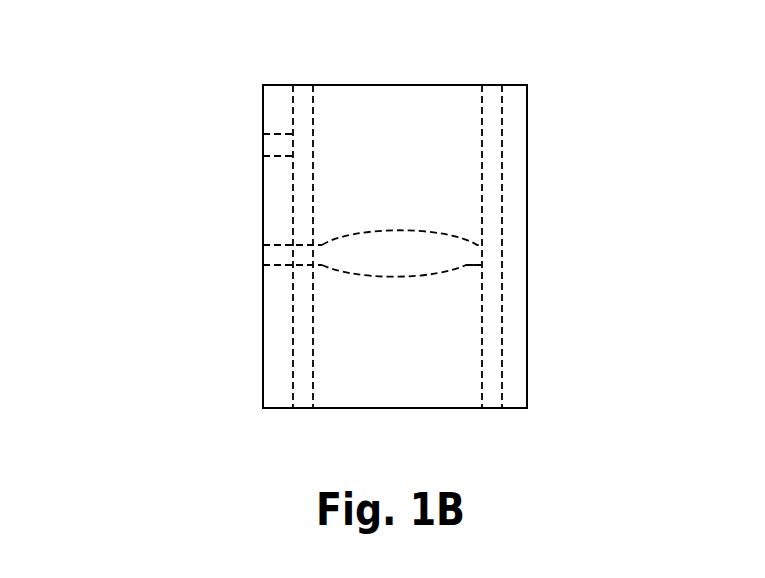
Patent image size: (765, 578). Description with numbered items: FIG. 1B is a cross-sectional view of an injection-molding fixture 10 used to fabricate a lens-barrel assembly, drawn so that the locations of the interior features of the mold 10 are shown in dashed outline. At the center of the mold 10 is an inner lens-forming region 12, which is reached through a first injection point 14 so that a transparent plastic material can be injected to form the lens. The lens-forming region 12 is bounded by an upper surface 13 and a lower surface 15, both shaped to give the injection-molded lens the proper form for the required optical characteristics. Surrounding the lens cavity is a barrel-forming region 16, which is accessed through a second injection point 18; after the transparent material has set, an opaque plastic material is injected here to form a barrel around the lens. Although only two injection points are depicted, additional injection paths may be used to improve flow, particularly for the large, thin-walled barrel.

The injection-molding fixture 10 is at (182, 83).
The inner lens-forming region 12 is at (441, 254).
The upper surface 13 is at (463, 216).
The first injection point 14 is at (246, 258).
The lower surface 15 is at (469, 298).
The barrel-forming region 16 is at (322, 118).
The second injection point 18 is at (249, 157).